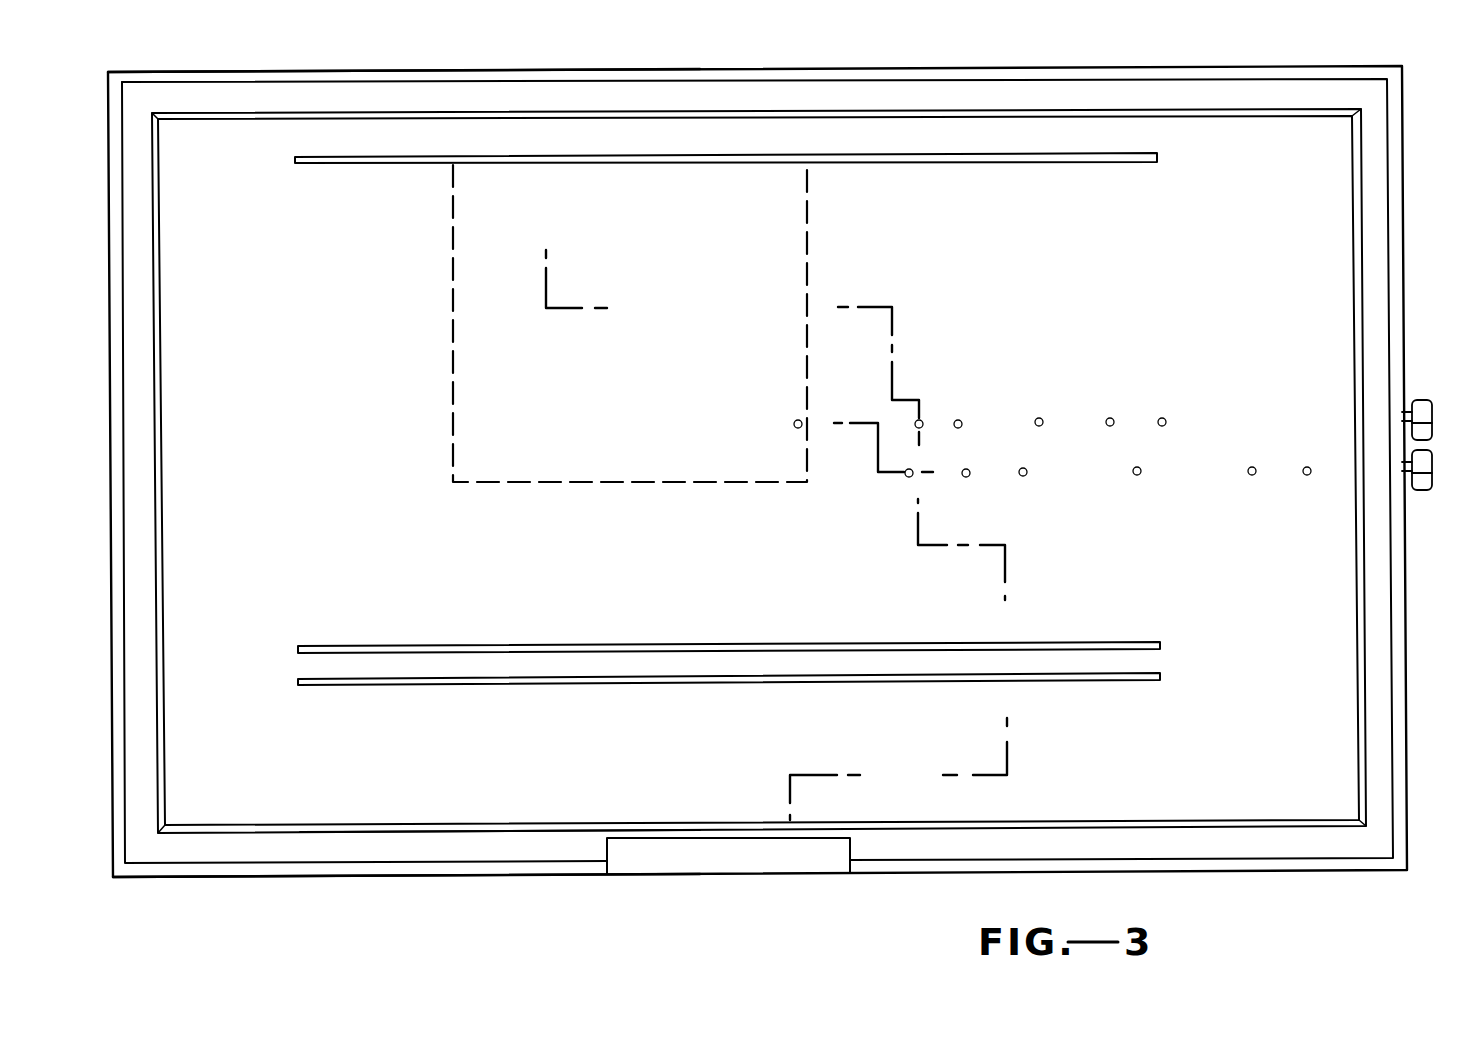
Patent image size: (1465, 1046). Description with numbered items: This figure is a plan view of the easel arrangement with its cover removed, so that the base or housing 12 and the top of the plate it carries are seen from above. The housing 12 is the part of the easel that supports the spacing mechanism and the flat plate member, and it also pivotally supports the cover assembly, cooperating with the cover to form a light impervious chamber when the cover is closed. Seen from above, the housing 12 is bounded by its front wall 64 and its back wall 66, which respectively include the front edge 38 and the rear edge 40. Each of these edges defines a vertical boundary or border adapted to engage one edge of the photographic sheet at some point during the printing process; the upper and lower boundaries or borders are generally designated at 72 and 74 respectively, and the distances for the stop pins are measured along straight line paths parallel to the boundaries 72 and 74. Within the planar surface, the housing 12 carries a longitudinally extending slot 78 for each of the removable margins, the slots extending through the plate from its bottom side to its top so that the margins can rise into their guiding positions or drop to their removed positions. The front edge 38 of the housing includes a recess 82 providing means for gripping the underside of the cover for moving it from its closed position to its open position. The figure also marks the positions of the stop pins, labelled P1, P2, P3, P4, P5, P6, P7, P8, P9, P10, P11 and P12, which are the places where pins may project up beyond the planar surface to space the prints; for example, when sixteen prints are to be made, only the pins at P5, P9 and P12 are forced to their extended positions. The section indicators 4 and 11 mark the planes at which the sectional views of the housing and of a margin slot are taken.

The base 12 is at (170, 898).
The front edge 38 is at (390, 868).
The edge 40 is at (299, 78).
The front wall 64 is at (323, 877).
The back wall 66 is at (207, 70).
The upper boundary 72 is at (247, 120).
The lower boundary 74 is at (410, 824).
The longitudinally extending slot 78 is at (738, 680).
The recess 82 is at (663, 860).
The section line 4- 4 is at (146, 425).
The section line 11- 11 is at (545, 145).
The connection point P1 is at (793, 424).
The connection point P2 is at (907, 478).
The connection point P3 is at (915, 421).
The connection point P4 is at (958, 419).
The stop pin position P5 is at (966, 478).
The connection point P6 is at (1022, 477).
The connection point P7 is at (1039, 417).
The connection point P8 is at (1110, 417).
The stop pin position P9 is at (1136, 476).
The connection point P10 is at (1163, 417).
The connection point P11 is at (1252, 476).
The stop pin position P12 is at (1307, 476).